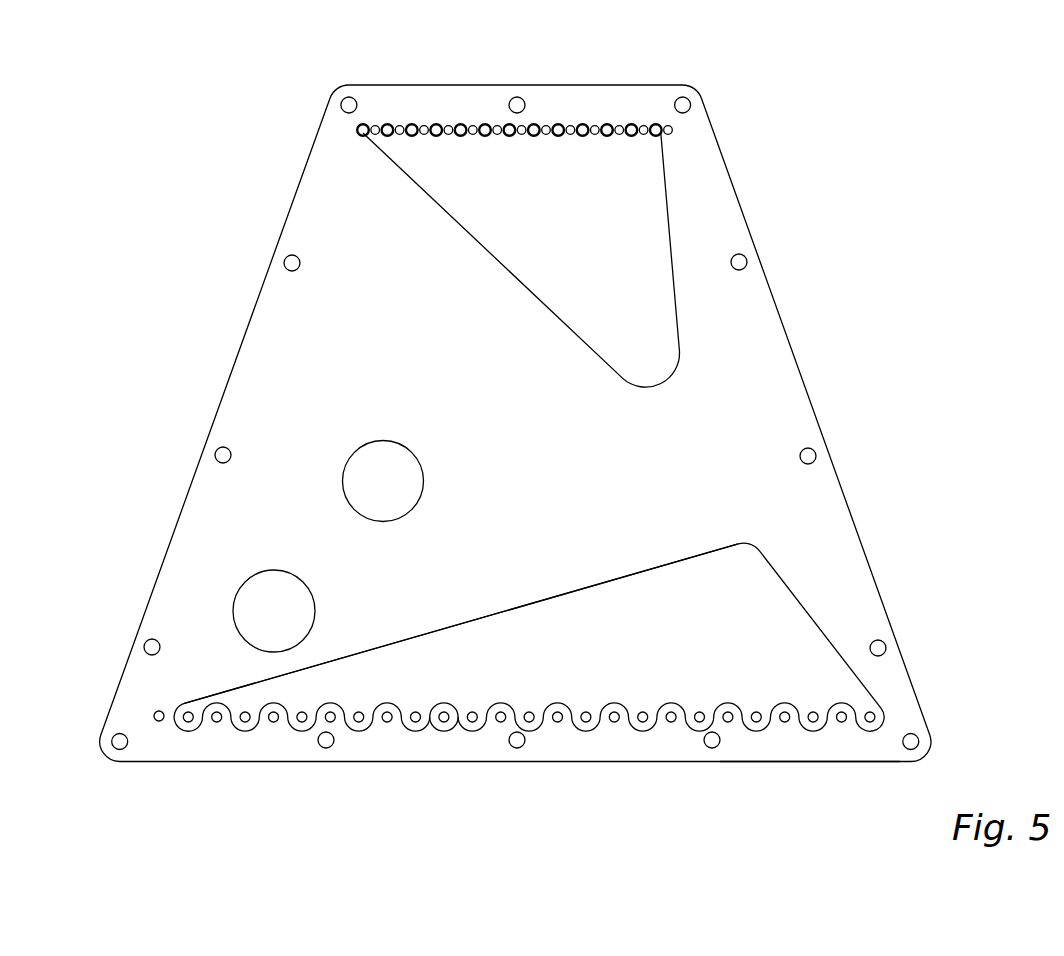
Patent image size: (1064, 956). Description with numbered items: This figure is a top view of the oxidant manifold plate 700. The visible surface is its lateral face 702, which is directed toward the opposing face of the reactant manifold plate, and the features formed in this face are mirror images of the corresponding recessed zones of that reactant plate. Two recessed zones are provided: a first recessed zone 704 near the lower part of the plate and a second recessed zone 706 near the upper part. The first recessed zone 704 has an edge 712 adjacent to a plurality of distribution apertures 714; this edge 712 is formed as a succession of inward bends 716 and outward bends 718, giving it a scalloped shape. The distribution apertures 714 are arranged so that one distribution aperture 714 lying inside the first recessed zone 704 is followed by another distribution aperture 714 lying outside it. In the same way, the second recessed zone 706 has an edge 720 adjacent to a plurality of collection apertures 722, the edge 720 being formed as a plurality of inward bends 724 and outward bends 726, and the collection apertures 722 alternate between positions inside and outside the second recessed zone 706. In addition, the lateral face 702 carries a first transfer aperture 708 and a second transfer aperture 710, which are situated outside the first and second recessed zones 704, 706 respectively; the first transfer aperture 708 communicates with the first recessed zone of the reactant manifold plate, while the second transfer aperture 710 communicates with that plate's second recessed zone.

The oxidant manifold plate 700 is at (217, 322).
The lateral face 702 is at (630, 452).
The first recessed zone 704 is at (530, 633).
The second recessed zone 706 is at (560, 193).
The first transfer aperture 708 is at (273, 612).
The second transfer aperture 710 is at (383, 483).
The edge 712 is at (540, 599).
The distribution apertures 714 is at (587, 721).
The inward bends 716 is at (457, 729).
The outward bends 718 is at (790, 732).
The edge 720 is at (539, 126).
The collection apertures 722 is at (374, 125).
The inward bends 724 is at (361, 134).
The outward bends 726 is at (634, 126).